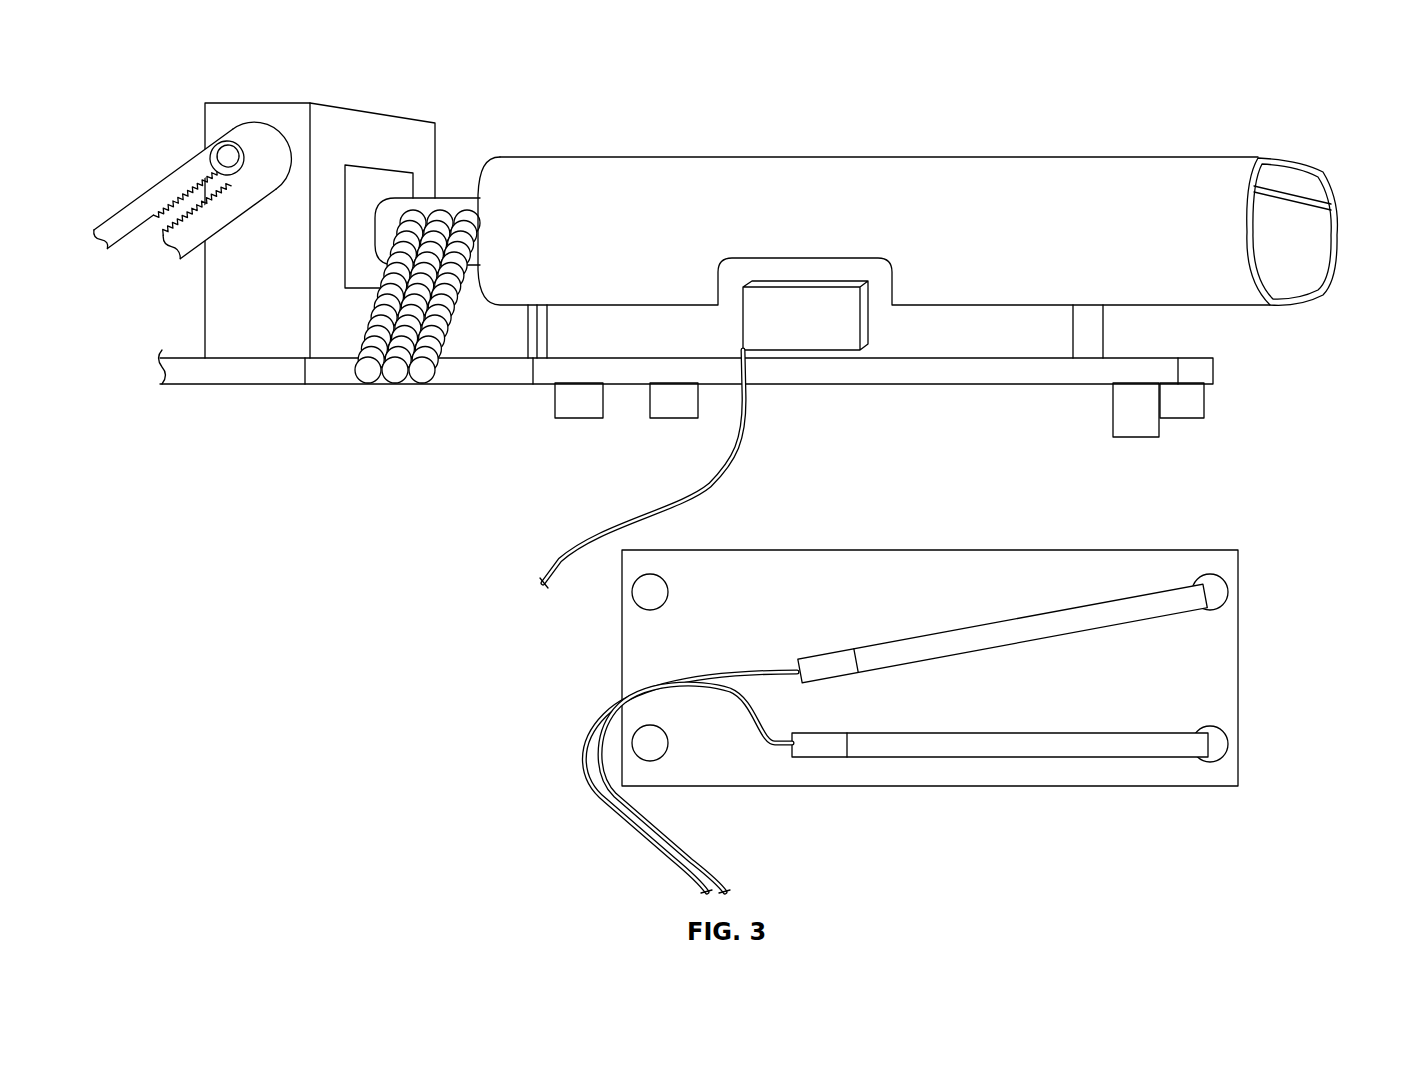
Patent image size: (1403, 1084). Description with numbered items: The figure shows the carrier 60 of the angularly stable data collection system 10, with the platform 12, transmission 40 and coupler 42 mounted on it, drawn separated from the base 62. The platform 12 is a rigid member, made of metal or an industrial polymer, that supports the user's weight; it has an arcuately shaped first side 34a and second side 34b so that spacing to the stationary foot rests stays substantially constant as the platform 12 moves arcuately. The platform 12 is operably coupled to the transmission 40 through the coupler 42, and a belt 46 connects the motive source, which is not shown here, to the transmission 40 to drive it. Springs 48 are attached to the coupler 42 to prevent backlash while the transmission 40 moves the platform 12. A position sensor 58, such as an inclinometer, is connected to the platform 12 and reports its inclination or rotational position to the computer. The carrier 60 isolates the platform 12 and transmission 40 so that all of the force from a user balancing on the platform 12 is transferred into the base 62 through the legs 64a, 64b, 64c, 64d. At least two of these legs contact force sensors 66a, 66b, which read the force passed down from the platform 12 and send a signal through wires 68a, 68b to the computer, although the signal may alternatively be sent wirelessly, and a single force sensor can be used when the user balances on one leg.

The angularly stable data collection system 10 is at (816, 106).
The platform 12 is at (928, 225).
The first side 34a is at (604, 199).
The second side 34b is at (1319, 258).
The transmission 40 is at (383, 112).
The coupler 42 is at (447, 197).
The belt 46 is at (192, 153).
The springs 48 is at (396, 368).
The position sensor 58 is at (868, 338).
The carrier 60 is at (470, 387).
The base 62 is at (1017, 550).
The leg 64a is at (1128, 440).
The leg 64b is at (1183, 420).
The leg 64c is at (580, 420).
The leg 64d is at (668, 420).
The force sensor 66a is at (1068, 732).
The force sensor 66b is at (1127, 622).
The wire 68a is at (697, 853).
The wire 68b is at (657, 847).